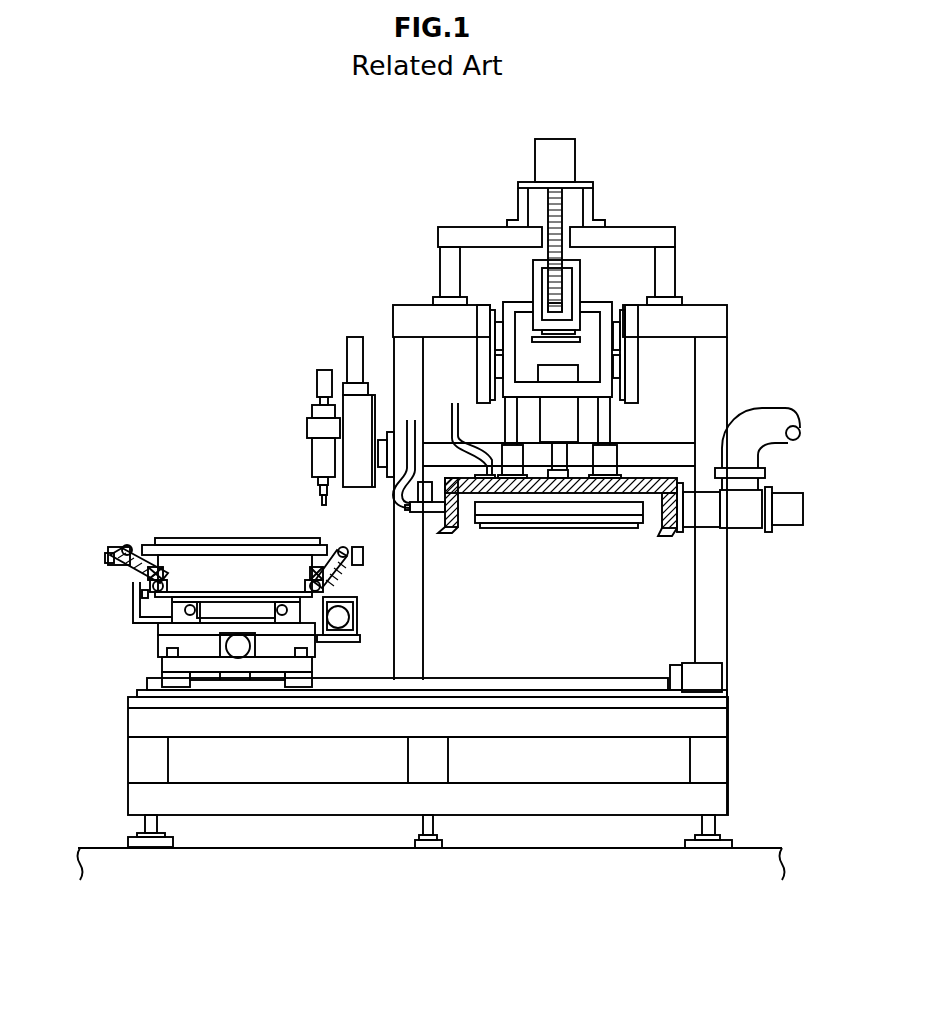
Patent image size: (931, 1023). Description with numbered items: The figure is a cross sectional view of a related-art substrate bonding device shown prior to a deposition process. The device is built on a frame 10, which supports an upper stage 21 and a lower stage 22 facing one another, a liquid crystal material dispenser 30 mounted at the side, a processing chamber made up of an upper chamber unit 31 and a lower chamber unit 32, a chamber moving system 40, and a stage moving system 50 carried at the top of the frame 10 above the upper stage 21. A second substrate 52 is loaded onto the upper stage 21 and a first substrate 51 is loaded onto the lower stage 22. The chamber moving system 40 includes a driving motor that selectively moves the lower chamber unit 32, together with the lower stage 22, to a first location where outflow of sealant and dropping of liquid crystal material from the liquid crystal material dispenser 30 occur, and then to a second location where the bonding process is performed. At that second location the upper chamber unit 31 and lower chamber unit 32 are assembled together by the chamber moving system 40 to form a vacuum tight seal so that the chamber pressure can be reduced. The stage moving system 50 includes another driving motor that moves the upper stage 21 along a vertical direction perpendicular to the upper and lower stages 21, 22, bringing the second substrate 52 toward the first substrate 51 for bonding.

The frame 10 is at (717, 610).
The upper stage 21 is at (563, 510).
The lower stage 22 is at (187, 565).
The liquid crystal material dispenser 30 is at (306, 448).
The upper chamber unit 31 is at (462, 497).
The lower chamber unit 32 is at (133, 582).
The chamber moving system 40 is at (715, 680).
The stage moving system 50 is at (568, 375).
The first substrate 51 is at (227, 537).
The second substrate 52 is at (618, 530).